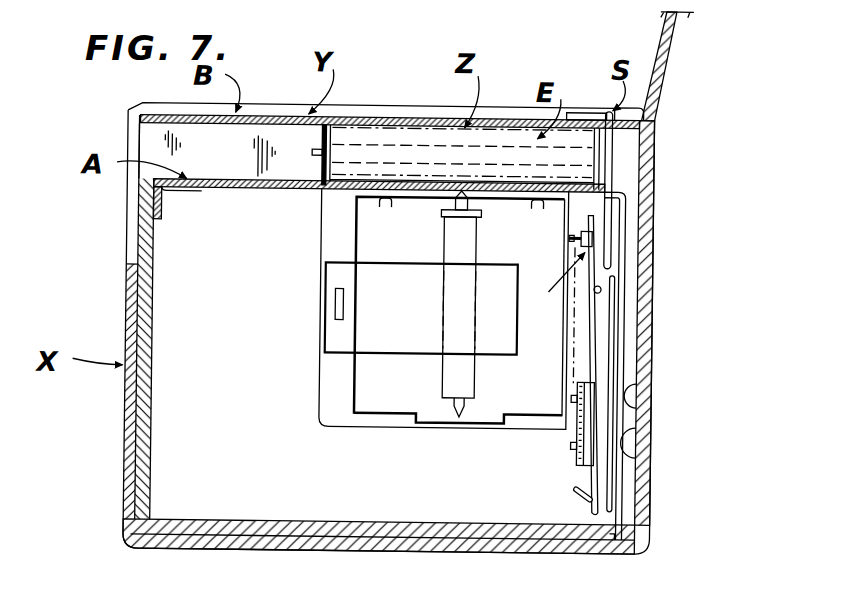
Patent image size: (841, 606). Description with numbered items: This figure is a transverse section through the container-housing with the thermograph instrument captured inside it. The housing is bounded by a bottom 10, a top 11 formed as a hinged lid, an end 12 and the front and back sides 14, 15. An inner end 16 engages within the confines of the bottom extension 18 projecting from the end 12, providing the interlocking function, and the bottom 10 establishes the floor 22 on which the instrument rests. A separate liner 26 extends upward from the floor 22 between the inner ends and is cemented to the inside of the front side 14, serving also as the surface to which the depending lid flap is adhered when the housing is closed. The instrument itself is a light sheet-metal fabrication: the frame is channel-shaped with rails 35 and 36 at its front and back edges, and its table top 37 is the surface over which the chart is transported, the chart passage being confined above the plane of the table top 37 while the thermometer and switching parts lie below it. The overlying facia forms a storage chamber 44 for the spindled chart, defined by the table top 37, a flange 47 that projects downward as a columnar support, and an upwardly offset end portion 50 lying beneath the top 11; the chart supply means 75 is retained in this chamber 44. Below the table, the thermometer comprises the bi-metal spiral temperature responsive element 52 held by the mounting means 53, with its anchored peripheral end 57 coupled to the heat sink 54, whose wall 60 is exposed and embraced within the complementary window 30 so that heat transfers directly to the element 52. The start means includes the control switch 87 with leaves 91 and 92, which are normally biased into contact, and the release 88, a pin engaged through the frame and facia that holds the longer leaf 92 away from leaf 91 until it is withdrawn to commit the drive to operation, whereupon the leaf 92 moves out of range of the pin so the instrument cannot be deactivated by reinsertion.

The bottom 10 is at (363, 553).
The top 11 is at (668, 30).
The end 12 is at (328, 383).
The front side 14 is at (126, 437).
The back side 15 is at (652, 358).
The inner end 16 is at (226, 327).
The bottom extension 18 is at (378, 106).
The floor 22 is at (508, 534).
The liner 26 is at (155, 262).
The complementary window 30 is at (333, 422).
The rail 35 is at (161, 207).
The rail 36 is at (622, 218).
The table top 37 is at (288, 176).
The storage chamber 44 is at (220, 153).
The flange 47 is at (152, 142).
The upwardly offset end portion 50 is at (262, 116).
The temperature responsive element 52 is at (352, 333).
The mounting means 53 is at (479, 383).
The heat sink 54 is at (407, 404).
The anchored peripheral end 57 is at (338, 289).
The wall 60 is at (397, 380).
The chart supply means 75 is at (316, 137).
The control switch 87 is at (576, 461).
The release 88 is at (614, 162).
The leaf 91 is at (614, 305).
The leaf 92 is at (590, 318).